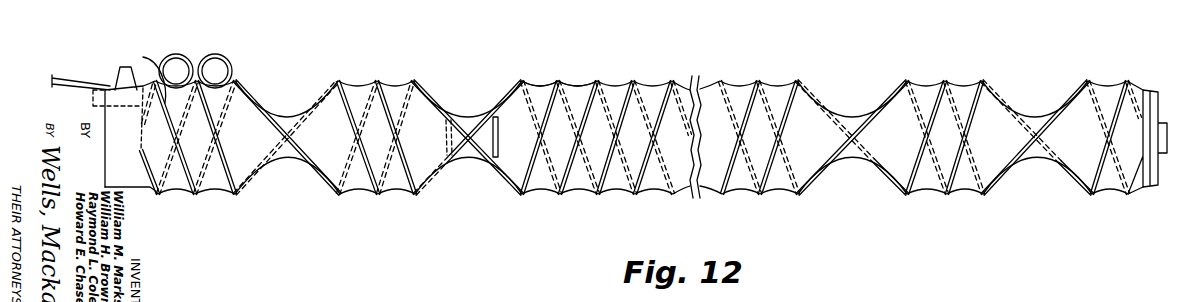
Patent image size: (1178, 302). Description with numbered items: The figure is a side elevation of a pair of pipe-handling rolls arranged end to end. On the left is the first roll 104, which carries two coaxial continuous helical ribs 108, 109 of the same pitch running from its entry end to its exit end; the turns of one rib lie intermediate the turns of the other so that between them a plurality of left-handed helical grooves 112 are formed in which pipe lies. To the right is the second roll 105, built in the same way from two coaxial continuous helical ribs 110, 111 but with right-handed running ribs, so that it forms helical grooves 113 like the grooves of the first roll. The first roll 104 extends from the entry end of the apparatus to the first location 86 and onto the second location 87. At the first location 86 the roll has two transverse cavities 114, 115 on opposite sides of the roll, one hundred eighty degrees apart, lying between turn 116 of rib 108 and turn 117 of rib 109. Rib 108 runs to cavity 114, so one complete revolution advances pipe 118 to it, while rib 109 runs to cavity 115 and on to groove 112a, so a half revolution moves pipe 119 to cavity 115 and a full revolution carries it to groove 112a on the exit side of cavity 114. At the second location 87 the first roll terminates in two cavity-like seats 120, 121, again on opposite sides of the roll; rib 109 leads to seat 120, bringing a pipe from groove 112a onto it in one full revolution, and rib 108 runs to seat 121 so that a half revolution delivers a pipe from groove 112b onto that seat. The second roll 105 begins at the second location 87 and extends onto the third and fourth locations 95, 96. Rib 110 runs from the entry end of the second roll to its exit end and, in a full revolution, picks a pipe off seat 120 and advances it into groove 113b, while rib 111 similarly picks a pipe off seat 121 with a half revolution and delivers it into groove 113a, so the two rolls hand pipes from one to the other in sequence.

The first location 86 is at (285, 93).
The second location 87 is at (466, 85).
The third location 95 is at (850, 83).
The fourth location 96 is at (1036, 80).
The first roll 104 is at (395, 196).
The second roll 105 is at (653, 87).
The helical rib 108 is at (186, 196).
The helical rib 109 is at (226, 196).
The helical rib 110 is at (531, 188).
The helical rib 111 is at (575, 186).
The helical grooves 112 is at (150, 80).
The helical groove 112a is at (377, 82).
The helical groove 112b is at (413, 82).
The helical grooves 113 is at (737, 82).
The helical groove 113a is at (537, 80).
The helical groove 113b is at (580, 82).
The transverse cavity 114 is at (300, 117).
The transverse cavity 115 is at (282, 160).
The turn of rib 116 is at (237, 77).
The turn of rib 117 is at (338, 80).
The pipe 118 is at (182, 54).
The pipe 119 is at (220, 54).
The cavity-like seat 120 is at (477, 117).
The cavity-like seat 121 is at (472, 157).